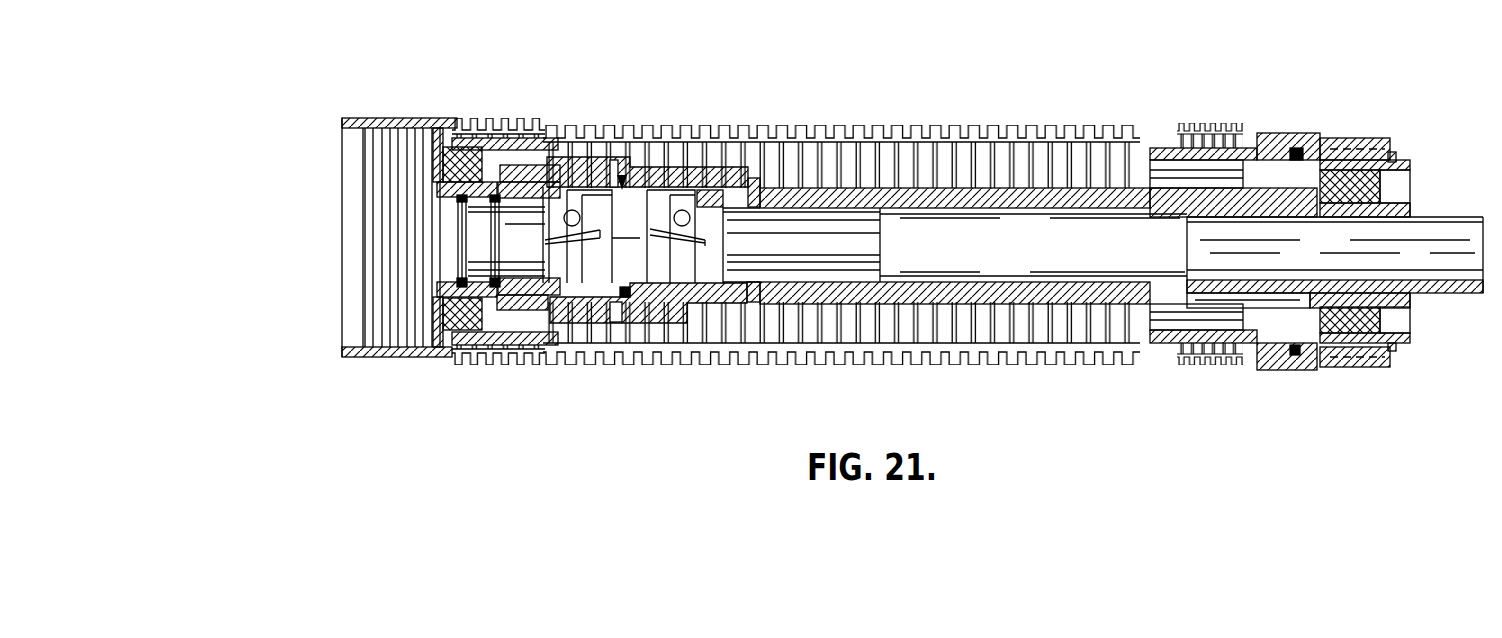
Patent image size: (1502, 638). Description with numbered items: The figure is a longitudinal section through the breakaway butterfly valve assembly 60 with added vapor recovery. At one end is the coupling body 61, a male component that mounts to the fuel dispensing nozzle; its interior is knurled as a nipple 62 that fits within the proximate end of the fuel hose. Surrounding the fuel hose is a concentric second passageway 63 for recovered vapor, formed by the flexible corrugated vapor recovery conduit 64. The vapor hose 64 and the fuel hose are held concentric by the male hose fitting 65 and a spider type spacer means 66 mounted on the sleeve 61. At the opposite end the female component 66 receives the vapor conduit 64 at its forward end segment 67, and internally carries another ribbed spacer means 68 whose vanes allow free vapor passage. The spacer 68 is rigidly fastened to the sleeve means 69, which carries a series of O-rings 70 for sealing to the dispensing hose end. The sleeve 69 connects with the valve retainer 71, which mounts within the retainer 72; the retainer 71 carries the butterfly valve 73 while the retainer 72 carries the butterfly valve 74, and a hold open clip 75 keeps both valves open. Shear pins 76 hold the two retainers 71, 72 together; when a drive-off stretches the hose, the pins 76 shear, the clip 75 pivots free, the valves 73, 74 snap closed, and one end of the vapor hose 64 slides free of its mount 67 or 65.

The assembly 60 is at (905, 112).
The coupling body 61 is at (1450, 295).
The knurled interior nipple 62 is at (1245, 288).
The second passageway 63 is at (1042, 160).
The flexible vapor recovery hose 64 is at (497, 118).
The male hose fitting 65 is at (1297, 150).
The spacer means / female component 66 is at (1360, 192).
The forward end segment 67 is at (518, 143).
The spacer means 68 is at (462, 326).
The sleeve means 69 is at (536, 263).
The O-rings 70 is at (492, 231).
The valve retainer 71 is at (543, 304).
The retainer 72 is at (682, 306).
The butterfly valve 73 is at (592, 243).
The butterfly valve 74 is at (672, 240).
The hold open clip 75 is at (631, 215).
The shear pins 76 is at (615, 182).